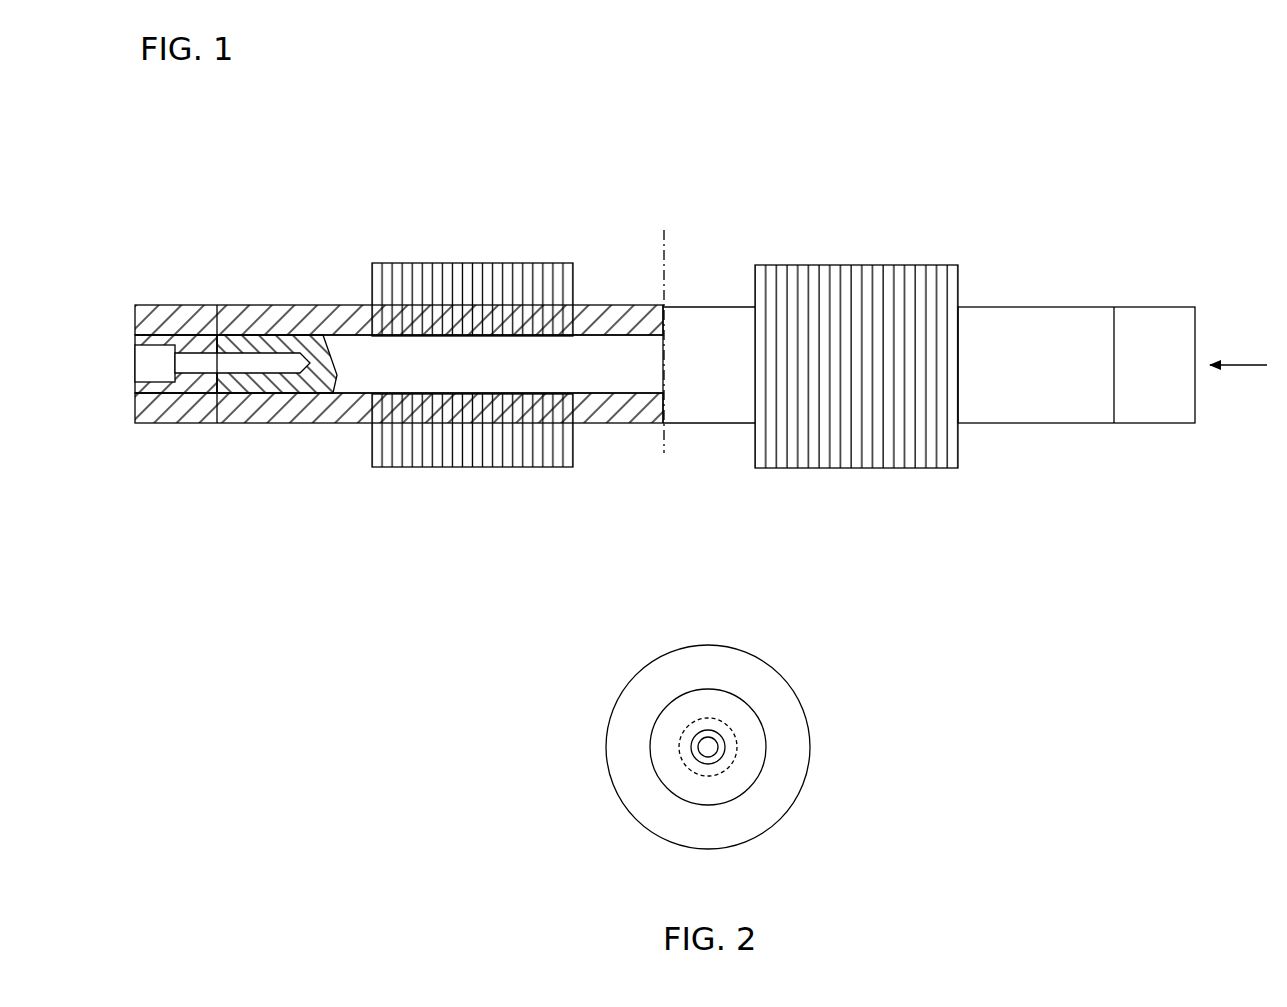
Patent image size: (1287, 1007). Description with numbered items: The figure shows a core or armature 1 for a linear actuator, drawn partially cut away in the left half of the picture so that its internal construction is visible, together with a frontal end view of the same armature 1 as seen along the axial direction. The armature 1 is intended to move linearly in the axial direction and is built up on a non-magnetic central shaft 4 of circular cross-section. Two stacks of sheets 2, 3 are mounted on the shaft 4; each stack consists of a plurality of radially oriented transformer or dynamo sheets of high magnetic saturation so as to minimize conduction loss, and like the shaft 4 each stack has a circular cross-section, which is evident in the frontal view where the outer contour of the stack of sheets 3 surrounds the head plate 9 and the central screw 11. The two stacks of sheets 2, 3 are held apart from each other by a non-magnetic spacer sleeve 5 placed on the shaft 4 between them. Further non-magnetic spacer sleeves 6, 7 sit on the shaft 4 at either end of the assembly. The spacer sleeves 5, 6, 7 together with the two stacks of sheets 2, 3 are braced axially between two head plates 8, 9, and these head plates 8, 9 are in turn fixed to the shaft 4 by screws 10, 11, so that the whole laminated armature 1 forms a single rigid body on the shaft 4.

In FIG. 1, the armature 1 is at (208, 237).
In FIG. 1, the stack of sheets 2 is at (437, 262).
In FIG. 1, the stack of sheets 3 is at (851, 262).
In FIG. 2, the stack of sheets 3 is at (621, 773).
In FIG. 1, the central shaft 4 is at (641, 362).
In FIG. 1, the spacer sleeve 5 is at (730, 398).
In FIG. 1, the spacer sleeve 6 is at (332, 408).
In FIG. 1, the spacer sleeve 7 is at (1021, 403).
In FIG. 1, the head plate 8 is at (197, 412).
In FIG. 1, the head plate 9 is at (1128, 412).
In FIG. 2, the head plate 9 is at (663, 745).
In FIG. 1, the screw 10 is at (238, 363).
In FIG. 2, the screw 11 is at (712, 748).